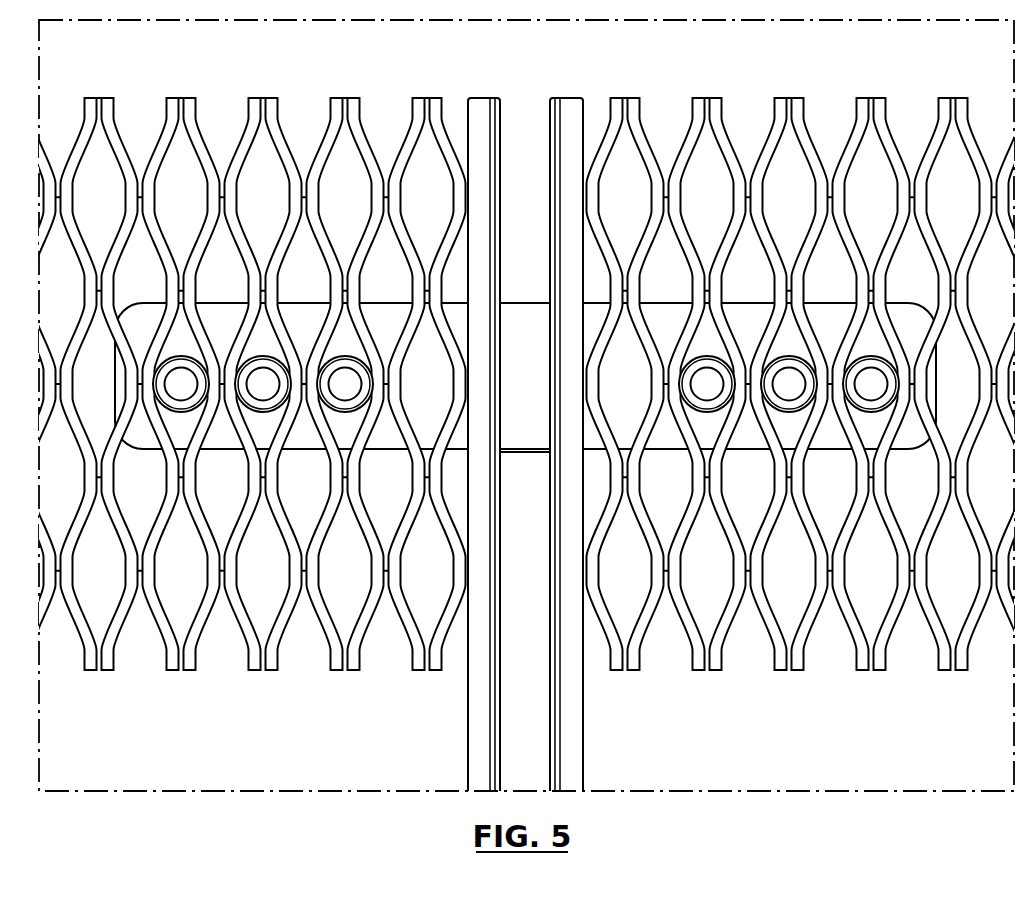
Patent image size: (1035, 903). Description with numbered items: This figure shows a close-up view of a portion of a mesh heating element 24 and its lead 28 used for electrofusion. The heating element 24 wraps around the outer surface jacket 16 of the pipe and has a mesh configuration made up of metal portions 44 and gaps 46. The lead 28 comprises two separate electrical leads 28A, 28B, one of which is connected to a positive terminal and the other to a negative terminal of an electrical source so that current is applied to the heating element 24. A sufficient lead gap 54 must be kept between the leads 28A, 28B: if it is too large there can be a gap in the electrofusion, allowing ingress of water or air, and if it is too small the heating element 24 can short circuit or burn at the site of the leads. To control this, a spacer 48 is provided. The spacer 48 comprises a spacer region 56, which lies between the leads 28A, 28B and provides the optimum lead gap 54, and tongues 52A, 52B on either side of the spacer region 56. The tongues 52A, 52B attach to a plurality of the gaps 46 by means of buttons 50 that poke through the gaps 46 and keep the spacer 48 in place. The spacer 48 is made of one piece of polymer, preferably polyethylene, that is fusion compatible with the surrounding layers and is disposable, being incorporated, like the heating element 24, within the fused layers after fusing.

The outer surface jacket 16 is at (165, 742).
The mesh heating element 24 is at (526, 390).
The lead 28 is at (526, 444).
The electrical lead 28A is at (468, 727).
The electrical lead 28B is at (583, 727).
The metal portions 44 is at (220, 613).
The gaps 46 is at (268, 232).
The spacer 48 is at (511, 368).
The buttons 50 is at (788, 380).
The tongue 52A is at (832, 450).
The tongue 52B is at (307, 433).
The lead gap 54 is at (512, 708).
The spacer region 56 is at (525, 423).